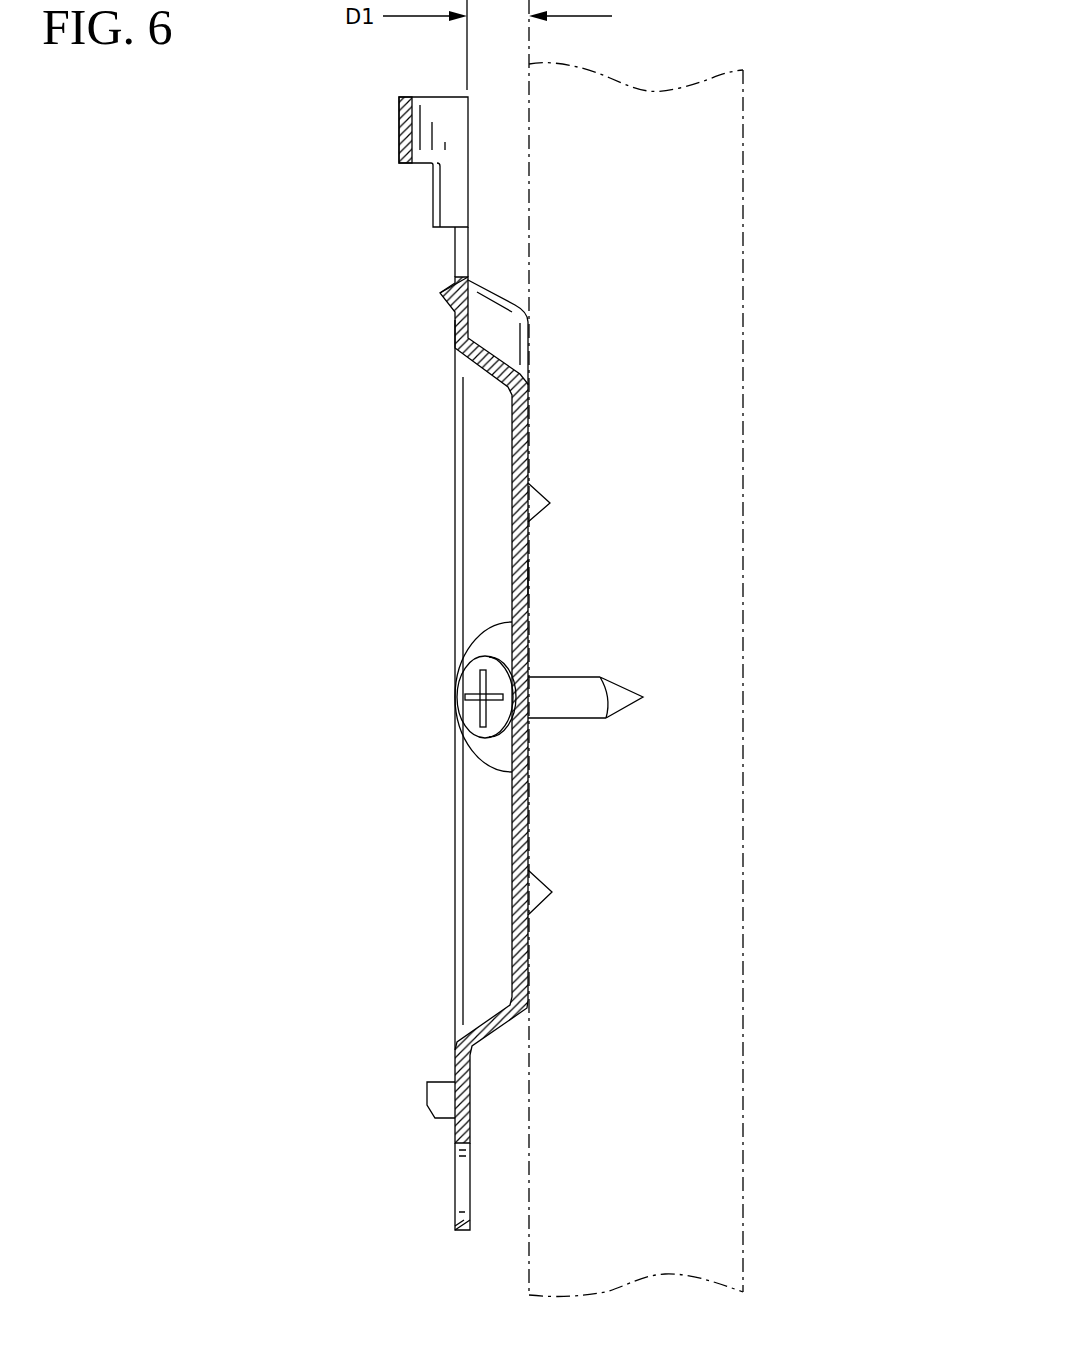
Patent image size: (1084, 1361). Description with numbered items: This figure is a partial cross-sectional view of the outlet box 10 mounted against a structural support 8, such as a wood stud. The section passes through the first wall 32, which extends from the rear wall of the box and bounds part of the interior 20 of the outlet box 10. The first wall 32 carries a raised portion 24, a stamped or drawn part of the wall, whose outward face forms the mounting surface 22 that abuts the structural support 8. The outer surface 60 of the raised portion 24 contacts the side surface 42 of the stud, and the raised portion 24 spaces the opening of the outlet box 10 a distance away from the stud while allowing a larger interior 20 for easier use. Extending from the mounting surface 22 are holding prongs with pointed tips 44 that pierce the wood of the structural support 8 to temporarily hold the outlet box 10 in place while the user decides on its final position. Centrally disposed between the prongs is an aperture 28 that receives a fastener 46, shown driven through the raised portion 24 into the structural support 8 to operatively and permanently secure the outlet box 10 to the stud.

The structural support 8 is at (697, 165).
The outlet box 10 is at (292, 142).
The interior 20 is at (395, 588).
The mounting surface 22 is at (528, 337).
The raised portion 24 is at (528, 438).
The aperture 28 is at (528, 697).
The first wall 32 is at (468, 227).
The side surface 42 is at (529, 124).
The pointed tips 44 is at (550, 503).
The fastener 46 is at (585, 692).
The outer surface 60 is at (528, 577).